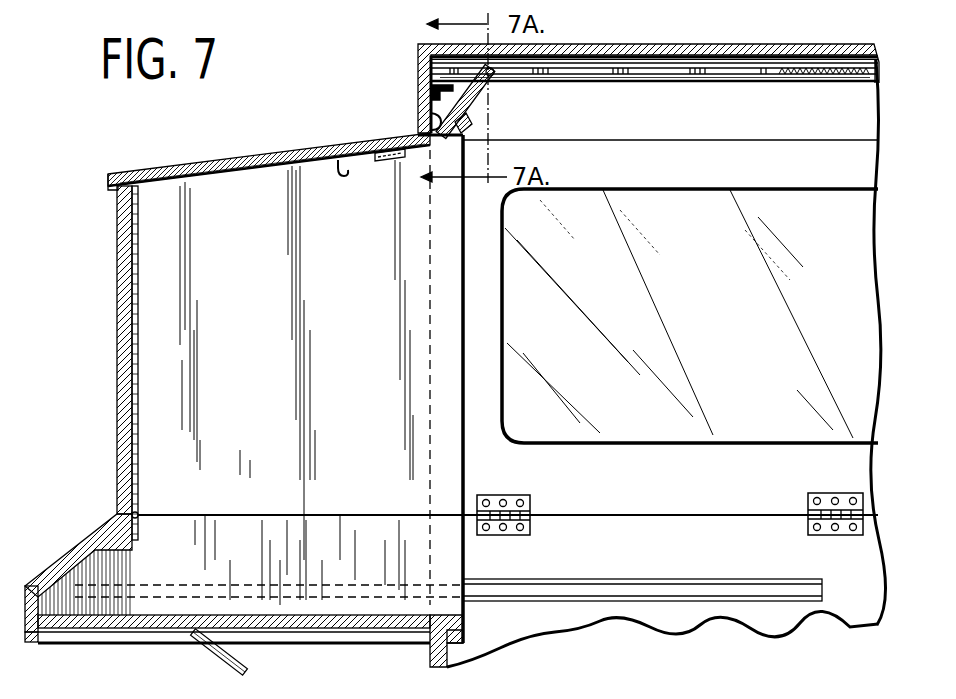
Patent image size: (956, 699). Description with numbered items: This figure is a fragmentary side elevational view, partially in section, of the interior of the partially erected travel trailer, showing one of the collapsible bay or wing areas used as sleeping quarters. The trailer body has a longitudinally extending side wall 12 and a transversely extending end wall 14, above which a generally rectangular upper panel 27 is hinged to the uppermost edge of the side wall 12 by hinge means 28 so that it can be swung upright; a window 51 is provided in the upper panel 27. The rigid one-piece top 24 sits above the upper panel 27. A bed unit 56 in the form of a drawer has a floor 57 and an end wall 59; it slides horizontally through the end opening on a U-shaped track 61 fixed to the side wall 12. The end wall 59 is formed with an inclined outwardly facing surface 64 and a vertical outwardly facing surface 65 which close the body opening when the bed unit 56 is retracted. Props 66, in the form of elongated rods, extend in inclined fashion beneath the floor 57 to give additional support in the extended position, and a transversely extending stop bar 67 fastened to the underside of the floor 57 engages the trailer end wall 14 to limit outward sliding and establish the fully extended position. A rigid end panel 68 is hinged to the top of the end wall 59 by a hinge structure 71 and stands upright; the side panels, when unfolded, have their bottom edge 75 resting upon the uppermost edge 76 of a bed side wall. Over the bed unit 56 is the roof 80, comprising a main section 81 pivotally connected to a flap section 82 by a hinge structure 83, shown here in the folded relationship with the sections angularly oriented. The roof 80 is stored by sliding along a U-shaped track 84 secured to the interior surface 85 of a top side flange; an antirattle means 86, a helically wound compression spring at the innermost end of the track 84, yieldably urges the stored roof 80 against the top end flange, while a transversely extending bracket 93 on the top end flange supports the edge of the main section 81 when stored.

The side wall 12 is at (680, 540).
The end wall 14 is at (430, 652).
The one-piece top 24 is at (721, 38).
The upper panel 27 is at (690, 487).
The hinge means 28 is at (513, 535).
The window 51 is at (787, 306).
The bed unit 56 is at (303, 645).
The bed unit floor 57 is at (333, 614).
The end wall 59 is at (35, 650).
The track 61 is at (745, 601).
The inclined surface 64 is at (80, 545).
The vertical surface 65 is at (28, 606).
The prop 66 is at (222, 661).
The stop bar 67 is at (465, 637).
The end panel 68 is at (117, 275).
The hinge structure 71 is at (143, 512).
The bottom edge 75 is at (227, 517).
The uppermost edge 76 is at (355, 510).
The roof 80 is at (205, 152).
The main section 81 is at (240, 170).
The flap section 82 is at (478, 100).
The hinge structure 83 is at (428, 116).
The track 84 is at (565, 82).
The interior surface 85 is at (580, 62).
The antirattle means 86 is at (803, 78).
The bracket 93 is at (428, 92).